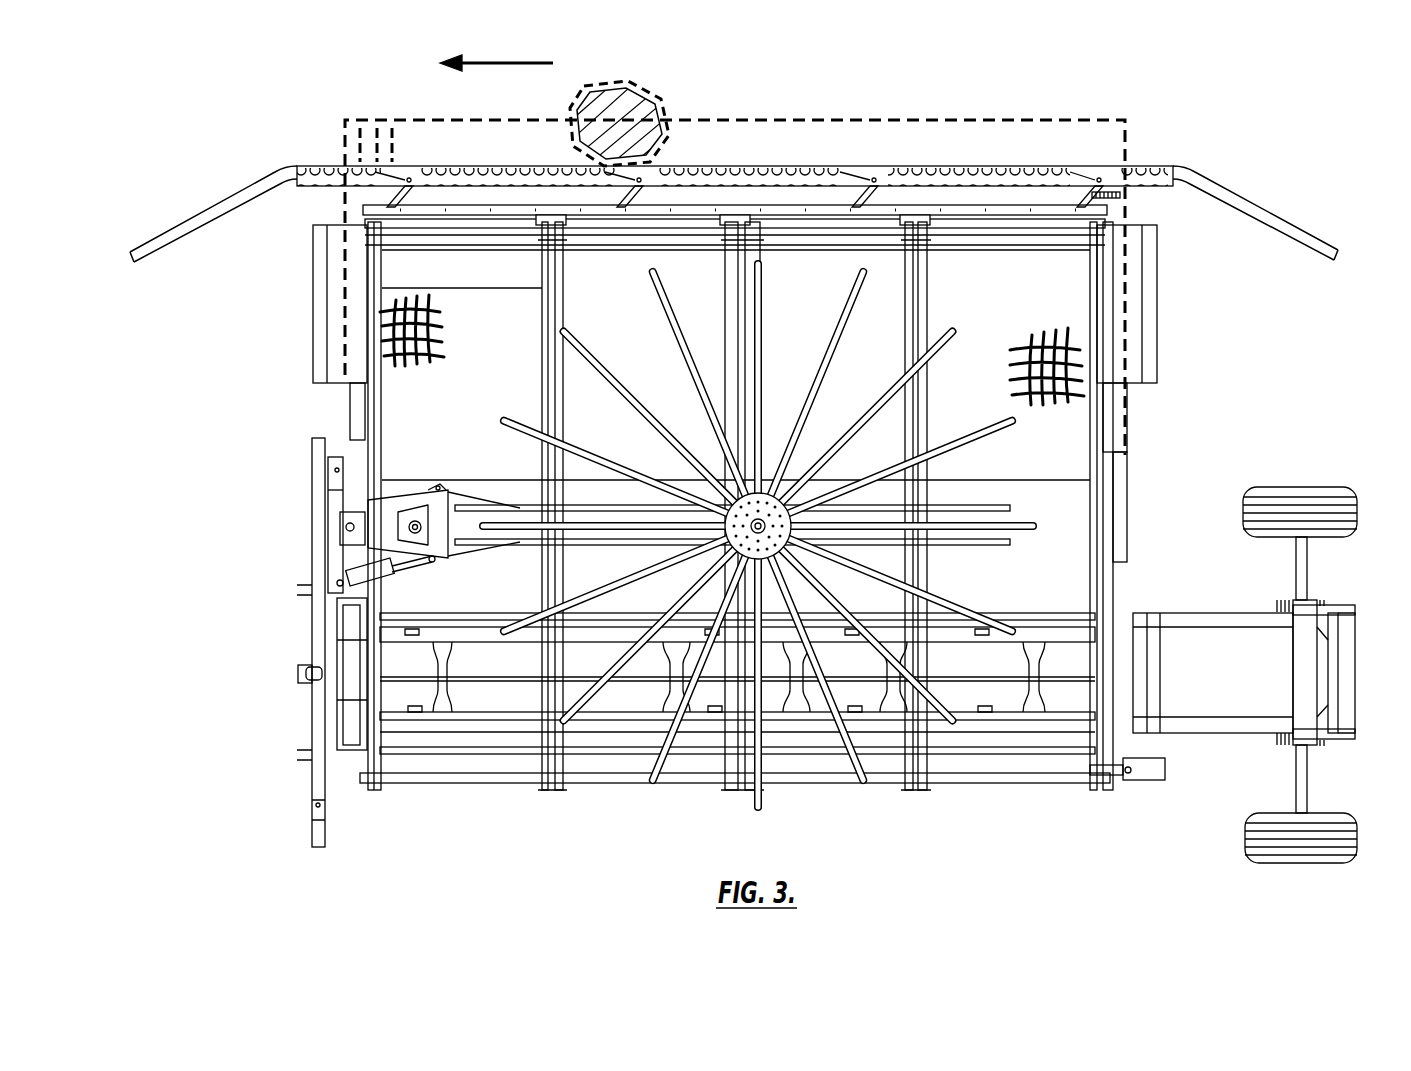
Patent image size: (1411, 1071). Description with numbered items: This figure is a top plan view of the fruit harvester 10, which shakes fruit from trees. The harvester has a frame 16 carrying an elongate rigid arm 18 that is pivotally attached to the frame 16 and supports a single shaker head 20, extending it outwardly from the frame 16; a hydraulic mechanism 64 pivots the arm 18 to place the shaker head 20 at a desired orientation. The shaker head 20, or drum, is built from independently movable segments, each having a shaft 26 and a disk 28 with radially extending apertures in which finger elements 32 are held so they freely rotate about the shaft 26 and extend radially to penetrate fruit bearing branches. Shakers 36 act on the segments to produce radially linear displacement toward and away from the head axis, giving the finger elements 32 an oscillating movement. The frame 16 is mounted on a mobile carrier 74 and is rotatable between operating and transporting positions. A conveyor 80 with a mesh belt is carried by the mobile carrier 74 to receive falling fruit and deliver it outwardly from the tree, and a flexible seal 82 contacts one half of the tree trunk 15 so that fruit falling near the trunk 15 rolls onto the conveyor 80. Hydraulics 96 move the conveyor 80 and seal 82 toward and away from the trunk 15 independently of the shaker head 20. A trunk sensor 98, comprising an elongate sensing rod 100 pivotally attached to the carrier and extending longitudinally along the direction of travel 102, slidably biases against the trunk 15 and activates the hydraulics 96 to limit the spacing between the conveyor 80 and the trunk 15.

The fruit harvester 10 is at (765, 261).
The trunk 15 is at (640, 110).
The frame 16 is at (318, 515).
The elongate rigid arm 18 is at (689, 461).
The shaker head 20 is at (758, 535).
The shaft 26 is at (758, 535).
The disk 28 is at (805, 498).
The finger elements 32 is at (833, 338).
The shakers 36 is at (810, 513).
The hydraulic mechanism 64 is at (367, 573).
The mobile carrier 74 is at (1032, 738).
The conveyor 80 is at (363, 320).
The flexible seal 82 is at (932, 136).
The hydraulics 96 is at (354, 704).
The trunk sensor 98 is at (1151, 195).
The elongate sensing rod 100 is at (734, 179).
The direction of travel 102 is at (508, 62).